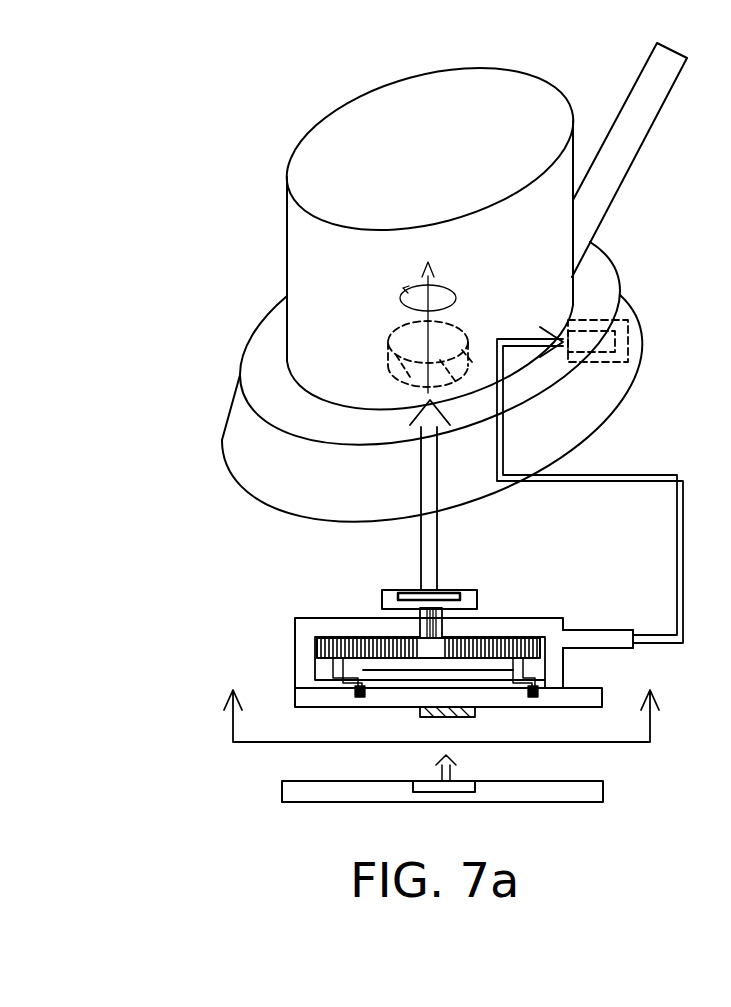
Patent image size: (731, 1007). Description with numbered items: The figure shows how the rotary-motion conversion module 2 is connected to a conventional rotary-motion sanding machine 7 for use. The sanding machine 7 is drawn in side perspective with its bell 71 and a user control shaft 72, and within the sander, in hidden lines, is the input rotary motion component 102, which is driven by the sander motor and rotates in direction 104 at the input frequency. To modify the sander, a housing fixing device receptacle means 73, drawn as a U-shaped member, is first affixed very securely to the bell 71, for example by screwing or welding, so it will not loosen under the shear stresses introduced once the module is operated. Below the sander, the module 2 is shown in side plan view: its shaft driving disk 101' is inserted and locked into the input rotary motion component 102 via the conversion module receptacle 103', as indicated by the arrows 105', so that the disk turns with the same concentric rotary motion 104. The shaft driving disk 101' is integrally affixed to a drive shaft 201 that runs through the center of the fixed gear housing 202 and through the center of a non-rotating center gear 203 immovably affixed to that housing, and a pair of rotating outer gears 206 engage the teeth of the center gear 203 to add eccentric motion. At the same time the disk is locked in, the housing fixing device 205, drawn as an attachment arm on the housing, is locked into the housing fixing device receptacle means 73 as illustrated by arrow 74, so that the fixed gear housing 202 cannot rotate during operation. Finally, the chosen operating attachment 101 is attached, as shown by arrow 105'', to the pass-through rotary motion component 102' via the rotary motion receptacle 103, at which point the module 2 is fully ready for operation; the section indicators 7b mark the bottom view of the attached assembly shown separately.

The sanding machine 7 is at (228, 154).
The bell 71 is at (263, 458).
The user control shaft 72 is at (617, 155).
The housing fixing device receptacle means 73 is at (620, 347).
The arrow 74 is at (652, 477).
The input rotary motion component 102 is at (430, 354).
The direction of rotation 104 is at (438, 300).
The shaft driving disk 101' is at (368, 495).
The arrows 105' is at (393, 495).
The section line for bottom view 7b is at (443, 716).
The rotary-motion conversion module 2 is at (242, 614).
The fixed gear housing 202 is at (393, 602).
The drive shaft 201 is at (335, 628).
The housing fixing device 205 is at (600, 640).
The rotating outer gears 206 is at (525, 638).
The non-rotating center gear 203 is at (470, 642).
The conversion module receptacle 103' is at (461, 575).
The pass-through rotary motion component 102' is at (489, 722).
The operating attachment 101 is at (481, 785).
The rotary motion receptacle 103 is at (403, 771).
The attachment arrow 105'' is at (494, 765).